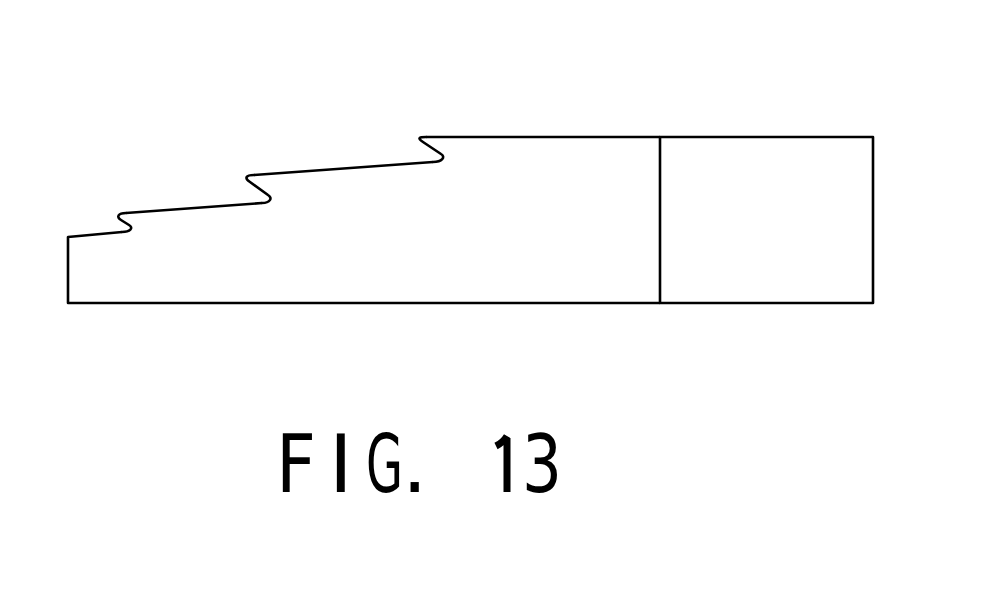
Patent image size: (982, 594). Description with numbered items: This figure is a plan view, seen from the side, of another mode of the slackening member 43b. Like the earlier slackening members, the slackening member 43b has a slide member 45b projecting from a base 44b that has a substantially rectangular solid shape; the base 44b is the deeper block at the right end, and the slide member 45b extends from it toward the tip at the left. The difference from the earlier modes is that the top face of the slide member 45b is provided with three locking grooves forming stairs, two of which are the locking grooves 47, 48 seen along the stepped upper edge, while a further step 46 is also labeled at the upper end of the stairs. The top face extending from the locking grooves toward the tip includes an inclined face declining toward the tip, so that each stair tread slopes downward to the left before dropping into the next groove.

The slackening member 43b is at (450, 208).
The base 44b is at (765, 278).
The slide member 45b is at (455, 267).
The step 46 is at (409, 156).
The locking groove 47 is at (236, 195).
The locking groove 48 is at (108, 223).